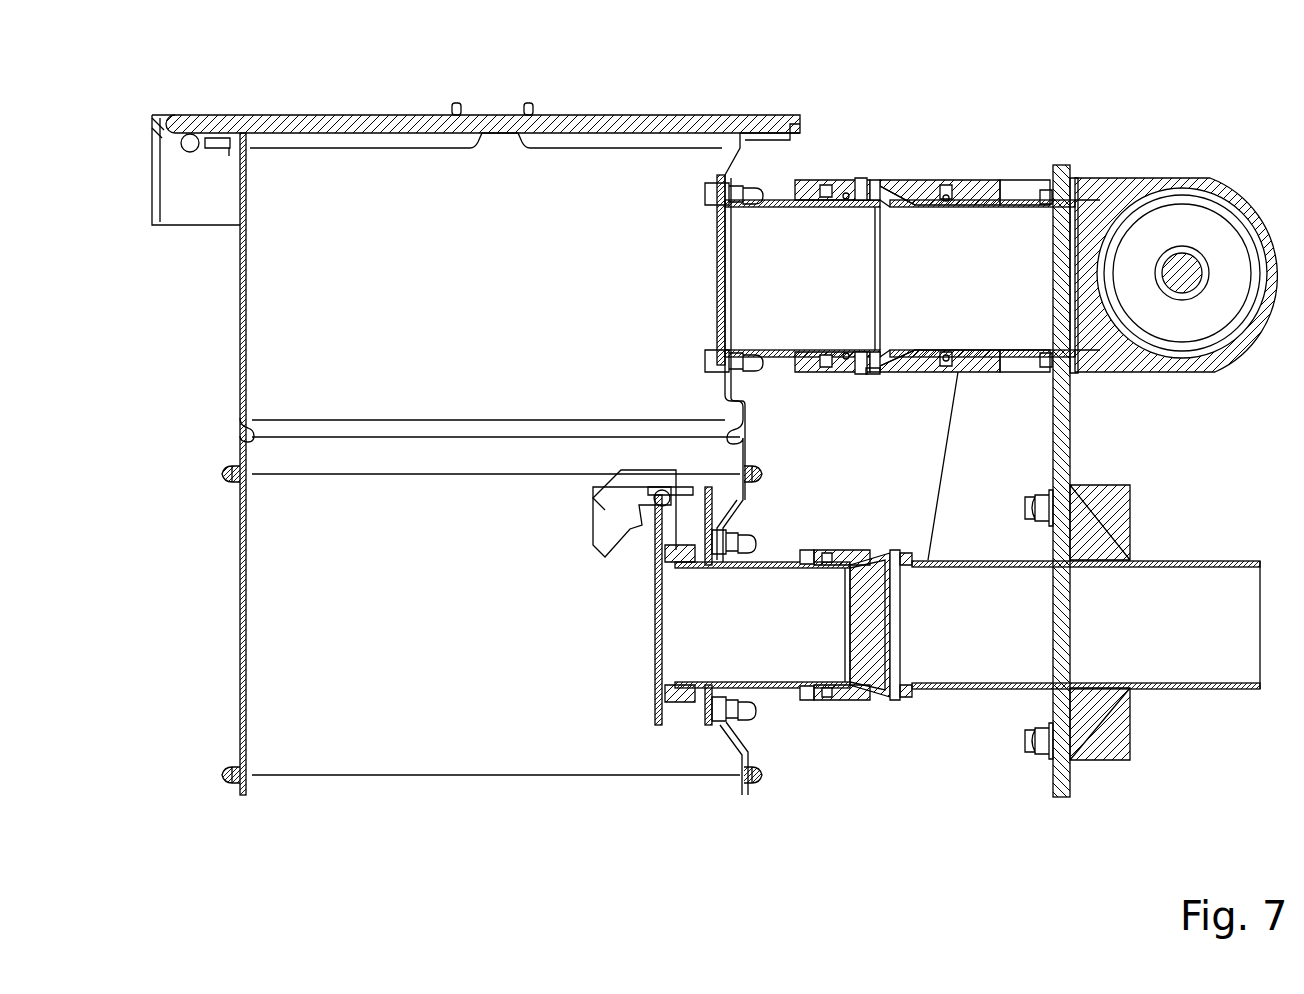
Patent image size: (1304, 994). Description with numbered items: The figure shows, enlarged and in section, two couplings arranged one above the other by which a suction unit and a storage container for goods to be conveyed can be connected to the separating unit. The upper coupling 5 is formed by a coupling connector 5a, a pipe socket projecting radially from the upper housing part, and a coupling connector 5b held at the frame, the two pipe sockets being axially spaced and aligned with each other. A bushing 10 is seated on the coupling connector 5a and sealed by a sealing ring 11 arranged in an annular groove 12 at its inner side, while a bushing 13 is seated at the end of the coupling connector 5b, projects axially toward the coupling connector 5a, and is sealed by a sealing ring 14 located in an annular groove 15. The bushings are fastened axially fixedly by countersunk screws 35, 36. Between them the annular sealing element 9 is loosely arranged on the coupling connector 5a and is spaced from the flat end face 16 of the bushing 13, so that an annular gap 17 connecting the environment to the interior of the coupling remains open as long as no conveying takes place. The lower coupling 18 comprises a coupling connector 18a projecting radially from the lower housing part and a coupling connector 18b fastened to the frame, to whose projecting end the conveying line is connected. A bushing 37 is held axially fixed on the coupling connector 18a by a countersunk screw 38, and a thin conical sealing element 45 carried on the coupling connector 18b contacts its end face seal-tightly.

The coupling 5 is at (912, 165).
The coupling connector 5a is at (770, 340).
The coupling connector 5b is at (1012, 345).
The sealing element 9 is at (870, 183).
The bushing 10 is at (830, 182).
The sealing ring 11 is at (832, 358).
The annular groove 12 is at (845, 185).
The bushing 13 is at (930, 185).
The sealing ring 14 is at (940, 352).
The annular groove 15 is at (955, 185).
The end face 16 is at (873, 368).
The annular gap 17 is at (865, 372).
The coupling 18 is at (982, 712).
The coupling connector 18a is at (667, 690).
The coupling connector 18b is at (1216, 690).
The countersunk screw 35 is at (820, 183).
The countersunk screw 36 is at (990, 183).
The bushing 37 is at (848, 545).
The countersunk screw 38 is at (812, 555).
The sealing element 45 is at (905, 690).